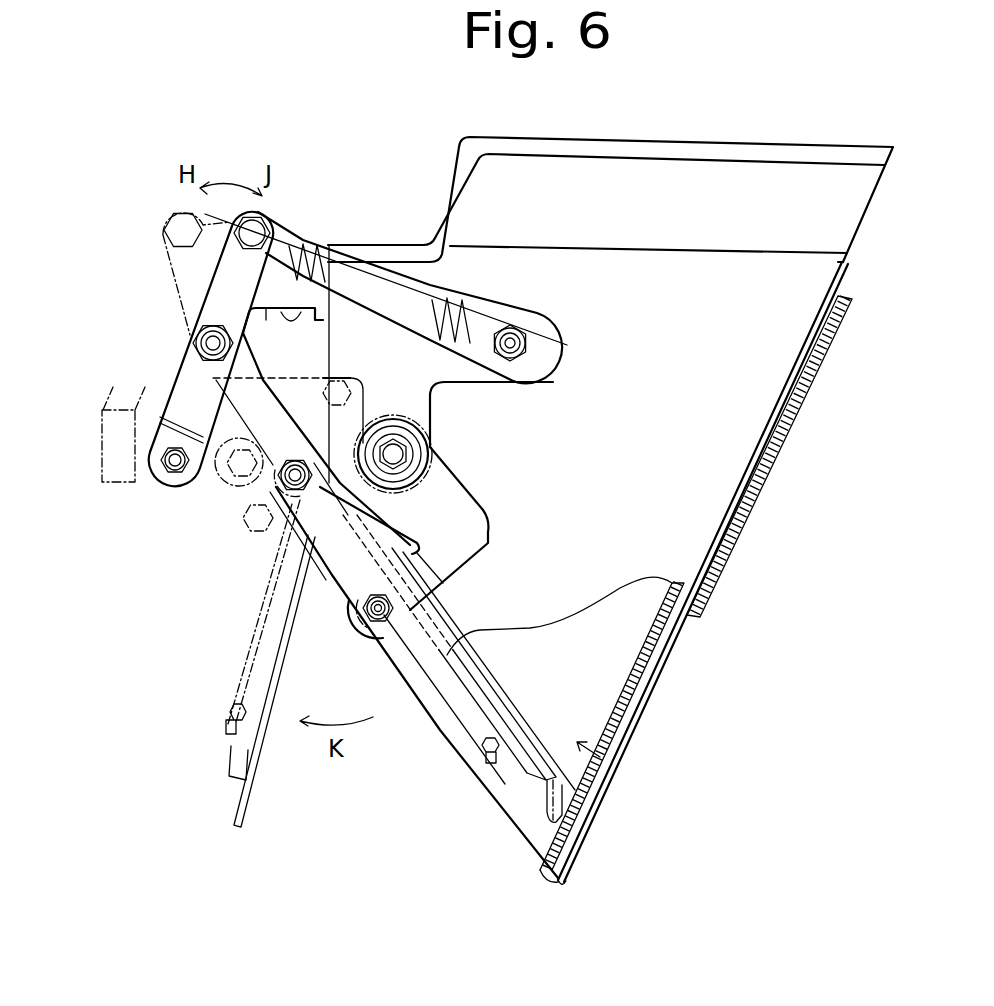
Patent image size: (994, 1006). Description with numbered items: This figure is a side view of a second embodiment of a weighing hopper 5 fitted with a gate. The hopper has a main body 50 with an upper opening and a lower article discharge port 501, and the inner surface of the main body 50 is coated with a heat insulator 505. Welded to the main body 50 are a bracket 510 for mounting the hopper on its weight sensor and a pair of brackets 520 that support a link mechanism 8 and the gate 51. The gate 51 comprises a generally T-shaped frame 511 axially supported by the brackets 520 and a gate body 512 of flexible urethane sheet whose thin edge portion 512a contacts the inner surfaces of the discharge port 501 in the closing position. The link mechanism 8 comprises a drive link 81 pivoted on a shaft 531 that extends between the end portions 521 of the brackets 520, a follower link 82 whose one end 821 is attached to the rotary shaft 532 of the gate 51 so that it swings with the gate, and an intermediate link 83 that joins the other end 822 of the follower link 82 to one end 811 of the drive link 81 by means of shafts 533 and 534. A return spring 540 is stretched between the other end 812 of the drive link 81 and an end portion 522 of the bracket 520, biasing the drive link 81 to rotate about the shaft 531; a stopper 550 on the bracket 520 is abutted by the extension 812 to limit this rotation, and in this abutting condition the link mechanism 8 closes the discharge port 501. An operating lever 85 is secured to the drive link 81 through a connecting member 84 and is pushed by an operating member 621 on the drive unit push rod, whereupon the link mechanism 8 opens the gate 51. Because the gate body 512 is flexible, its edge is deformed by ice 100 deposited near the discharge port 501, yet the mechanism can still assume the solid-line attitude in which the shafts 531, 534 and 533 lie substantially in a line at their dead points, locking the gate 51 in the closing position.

The weighing hopper 5 is at (798, 114).
The hopper main body 50 is at (780, 370).
The bracket 510 is at (785, 413).
The heat insulator 505 is at (650, 637).
The article discharge port 501 is at (617, 753).
The ice 100 is at (550, 837).
The gate 51 is at (448, 722).
The gate body 512 is at (483, 697).
The frame 511 is at (478, 712).
The edge portion 512a is at (550, 793).
The return spring 540 is at (322, 272).
The end portion of bracket 522 is at (558, 342).
The bracket 520 is at (478, 372).
The stopper 550 is at (320, 323).
The rotary shaft 532 is at (410, 447).
The one end of follower link 821 is at (430, 448).
The follower link 82 is at (473, 505).
The shaft 533 is at (377, 625).
The other end of follower link 822 is at (370, 600).
The intermediate link 83 is at (350, 560).
The shaft 534 is at (280, 545).
The one end of drive link 811 is at (262, 492).
The drive link 81 is at (205, 412).
The link mechanism 8 is at (270, 520).
The connecting member 84 is at (165, 385).
The operating lever 85 is at (153, 472).
The operating member 621 is at (104, 468).
The shaft 531 is at (200, 345).
The end portion of bracket 521 is at (193, 317).
The other end (extension) of drive link 812 is at (215, 272).